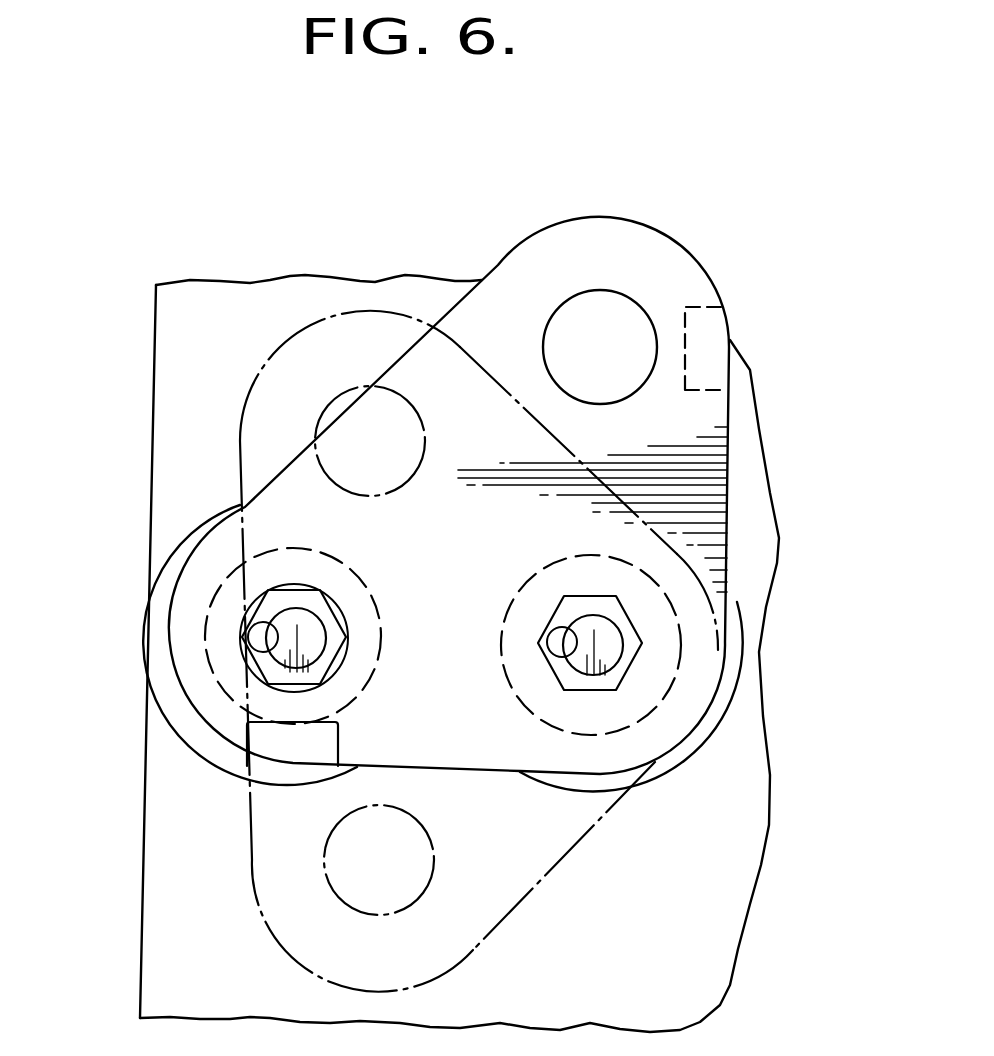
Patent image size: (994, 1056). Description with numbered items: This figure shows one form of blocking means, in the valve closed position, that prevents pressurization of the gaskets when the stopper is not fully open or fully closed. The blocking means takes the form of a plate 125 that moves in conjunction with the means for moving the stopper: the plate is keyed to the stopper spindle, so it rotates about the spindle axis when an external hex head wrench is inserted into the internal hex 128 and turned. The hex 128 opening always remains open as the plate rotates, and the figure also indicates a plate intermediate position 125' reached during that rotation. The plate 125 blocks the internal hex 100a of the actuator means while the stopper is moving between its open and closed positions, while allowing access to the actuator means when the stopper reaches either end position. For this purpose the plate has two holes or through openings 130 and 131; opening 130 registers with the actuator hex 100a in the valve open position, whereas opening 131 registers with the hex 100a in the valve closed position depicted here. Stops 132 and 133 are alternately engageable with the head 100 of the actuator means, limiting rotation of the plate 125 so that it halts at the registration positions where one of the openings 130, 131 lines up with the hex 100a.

The plate 125 is at (442, 480).
The plate intermediate position 125' is at (479, 651).
The through opening 130 is at (613, 300).
The stop 132 is at (693, 303).
The through opening 131 is at (258, 601).
The head 100 is at (368, 583).
The internal hex 100a is at (307, 605).
The internal hex 128 is at (607, 611).
The stop 133 is at (250, 735).